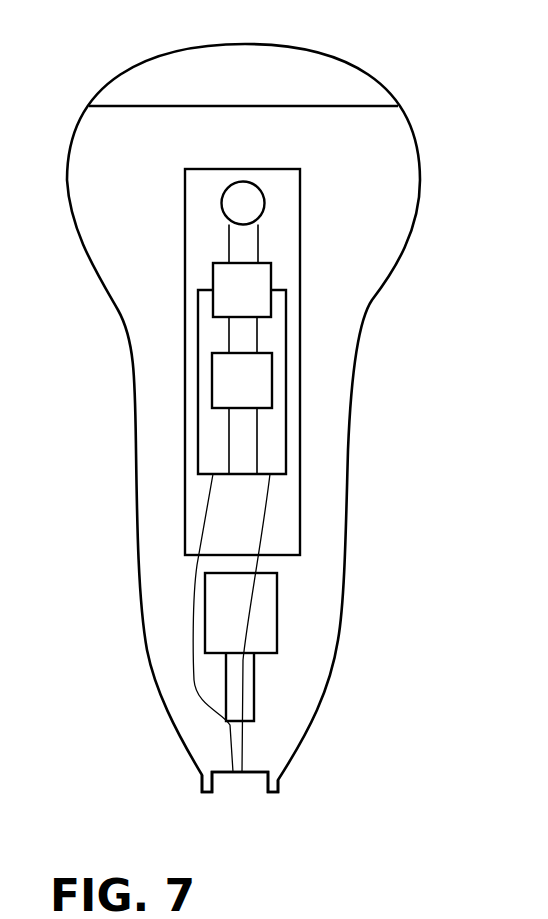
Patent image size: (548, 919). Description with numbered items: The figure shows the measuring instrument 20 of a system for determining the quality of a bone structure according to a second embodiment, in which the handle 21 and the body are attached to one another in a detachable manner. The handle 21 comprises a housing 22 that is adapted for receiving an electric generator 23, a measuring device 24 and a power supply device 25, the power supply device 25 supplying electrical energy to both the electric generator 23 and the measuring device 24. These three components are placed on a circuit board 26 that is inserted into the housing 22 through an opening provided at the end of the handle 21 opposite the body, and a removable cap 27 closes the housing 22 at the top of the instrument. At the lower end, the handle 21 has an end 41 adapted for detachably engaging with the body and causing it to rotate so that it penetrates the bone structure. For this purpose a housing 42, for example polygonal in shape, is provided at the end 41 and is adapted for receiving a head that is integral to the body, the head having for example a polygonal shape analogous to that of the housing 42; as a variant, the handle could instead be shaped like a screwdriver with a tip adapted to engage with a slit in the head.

The hand-held device 20 is at (266, 426).
The handle 21 is at (343, 578).
The housing 22 is at (362, 206).
The electric generator 23 is at (212, 308).
The measuring device 24 is at (270, 368).
The power supply device 25 is at (223, 210).
The circuit board 26 is at (300, 438).
The removable cap 27 is at (160, 83).
The end of the handle 41 is at (278, 778).
The housing 42 is at (228, 772).